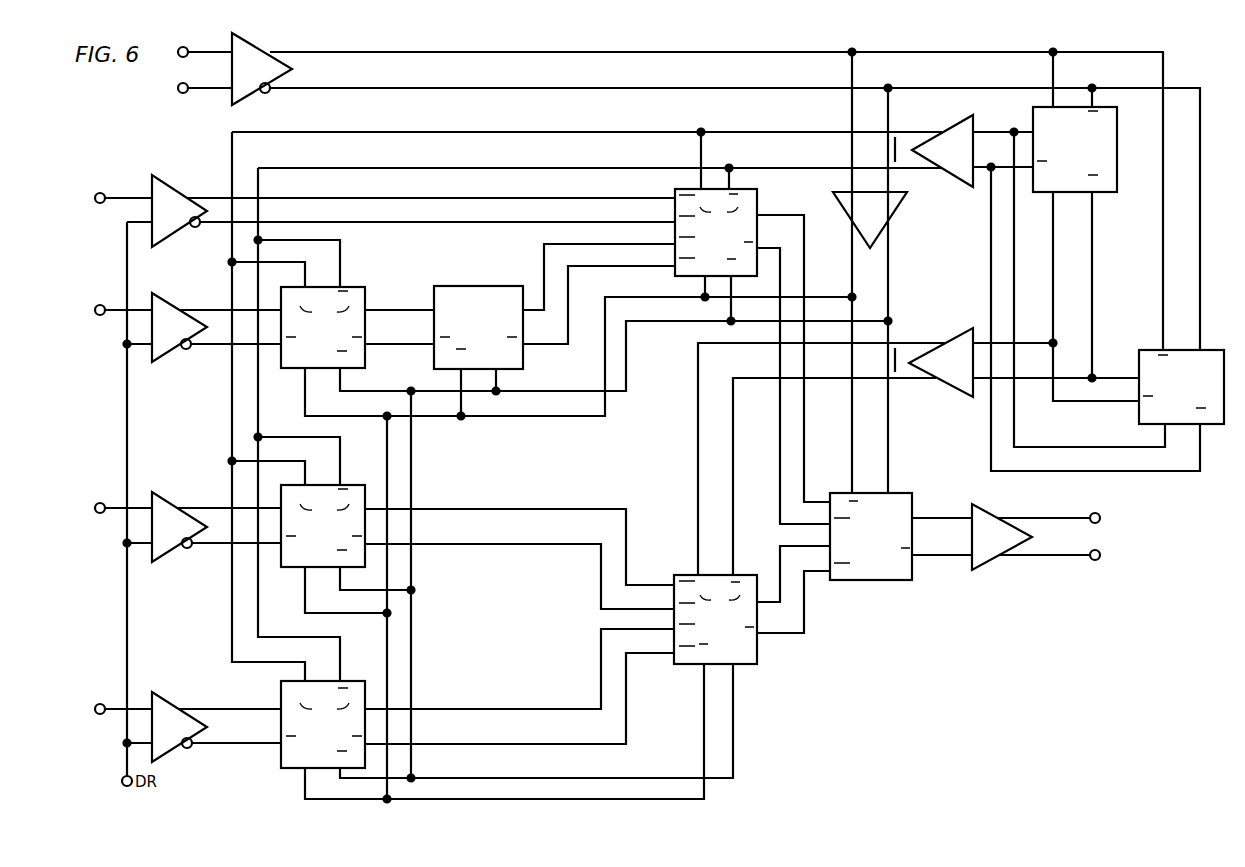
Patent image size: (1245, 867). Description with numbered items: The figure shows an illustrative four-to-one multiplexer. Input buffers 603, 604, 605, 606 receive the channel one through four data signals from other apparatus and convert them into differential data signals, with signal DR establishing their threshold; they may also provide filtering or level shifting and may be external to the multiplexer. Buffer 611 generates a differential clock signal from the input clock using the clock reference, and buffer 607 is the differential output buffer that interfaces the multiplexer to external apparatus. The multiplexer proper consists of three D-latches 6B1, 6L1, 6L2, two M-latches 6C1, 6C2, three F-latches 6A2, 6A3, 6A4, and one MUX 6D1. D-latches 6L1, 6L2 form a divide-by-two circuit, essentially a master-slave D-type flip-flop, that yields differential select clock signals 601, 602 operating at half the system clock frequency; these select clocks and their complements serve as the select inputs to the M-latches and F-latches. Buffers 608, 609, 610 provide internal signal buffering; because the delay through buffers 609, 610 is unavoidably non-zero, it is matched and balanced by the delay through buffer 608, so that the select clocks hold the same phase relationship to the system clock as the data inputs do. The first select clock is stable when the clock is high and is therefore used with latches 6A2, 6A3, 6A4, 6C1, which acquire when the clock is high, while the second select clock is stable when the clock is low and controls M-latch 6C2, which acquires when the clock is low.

The differential select clock signal 601 is at (898, 175).
The differential select clock signal 602 is at (896, 388).
The buffer 603 is at (185, 192).
The buffer 604 is at (185, 308).
The buffer 605 is at (185, 507).
The buffer 606 is at (185, 708).
The differential output buffer 607 is at (983, 512).
The buffer 608 is at (894, 212).
The buffer 609 is at (948, 126).
The buffer 610 is at (947, 385).
The buffer 611 is at (245, 97).
The F-latch 6A3 is at (323, 327).
The F-latch 6A2 is at (323, 526).
The F-latch 6A4 is at (323, 724).
The D-latch 6B1 is at (478, 327).
The M-latch 6C1 is at (716, 232).
The M-latch 6C2 is at (715, 619).
The MUX 6D1 is at (871, 536).
The D-latch 6L1 is at (1181, 387).
The D-latch 6L2 is at (1075, 149).